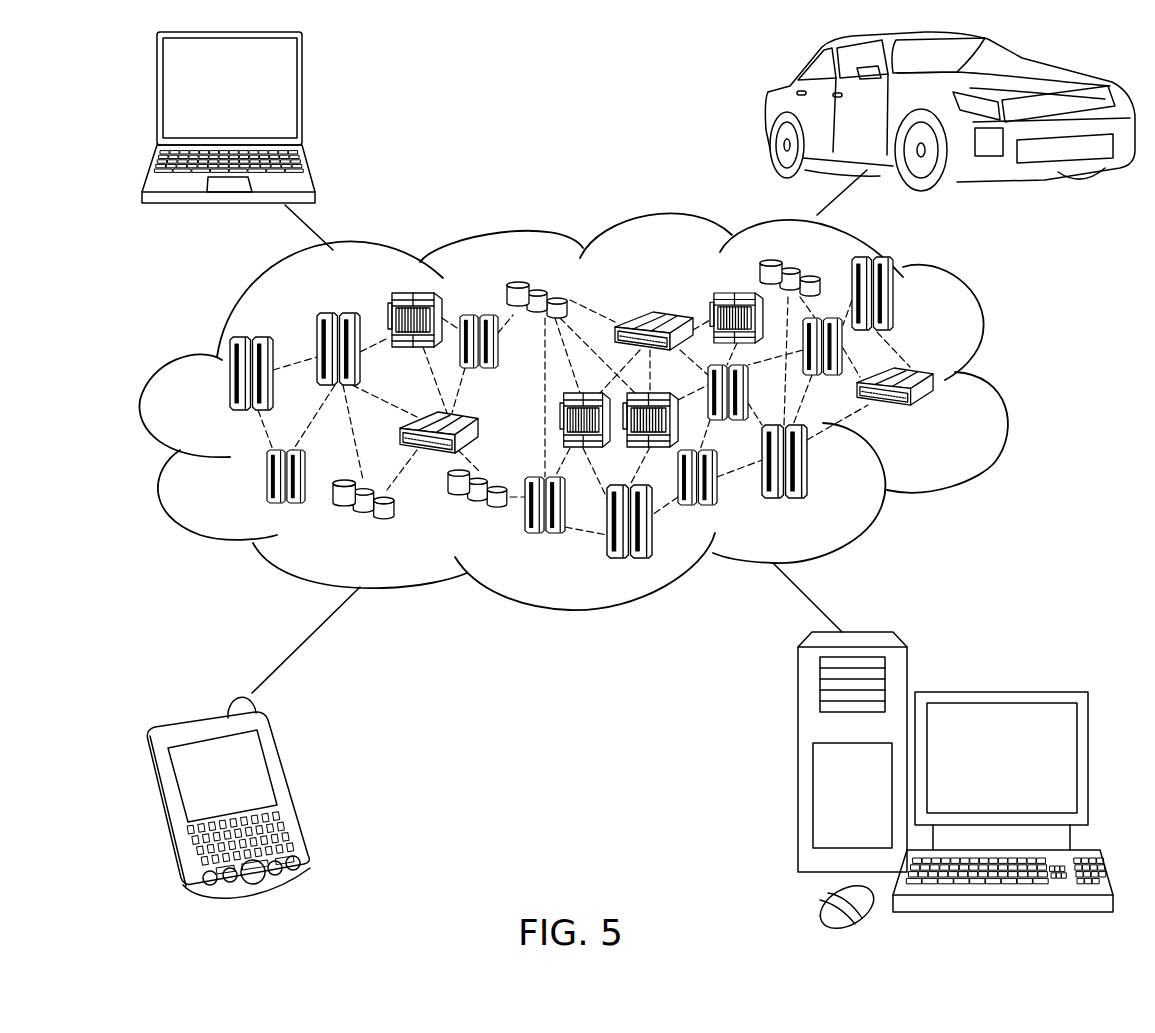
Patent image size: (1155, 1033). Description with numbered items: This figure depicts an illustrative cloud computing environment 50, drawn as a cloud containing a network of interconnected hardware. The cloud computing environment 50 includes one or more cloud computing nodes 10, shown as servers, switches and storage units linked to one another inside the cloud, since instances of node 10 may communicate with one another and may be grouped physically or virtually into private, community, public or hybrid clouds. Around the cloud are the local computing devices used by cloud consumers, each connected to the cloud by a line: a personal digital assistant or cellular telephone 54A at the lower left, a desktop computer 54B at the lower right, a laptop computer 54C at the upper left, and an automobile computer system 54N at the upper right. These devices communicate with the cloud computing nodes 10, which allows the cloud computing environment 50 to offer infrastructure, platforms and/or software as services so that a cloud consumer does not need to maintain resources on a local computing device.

The cloud computing node 10 is at (948, 420).
The cloud computing environment 50 is at (998, 383).
The personal digital assistant or cellular telephone 54A is at (292, 791).
The desktop computer 54B is at (998, 692).
The laptop computer 54C is at (302, 95).
The automobile computer system 54N is at (765, 113).